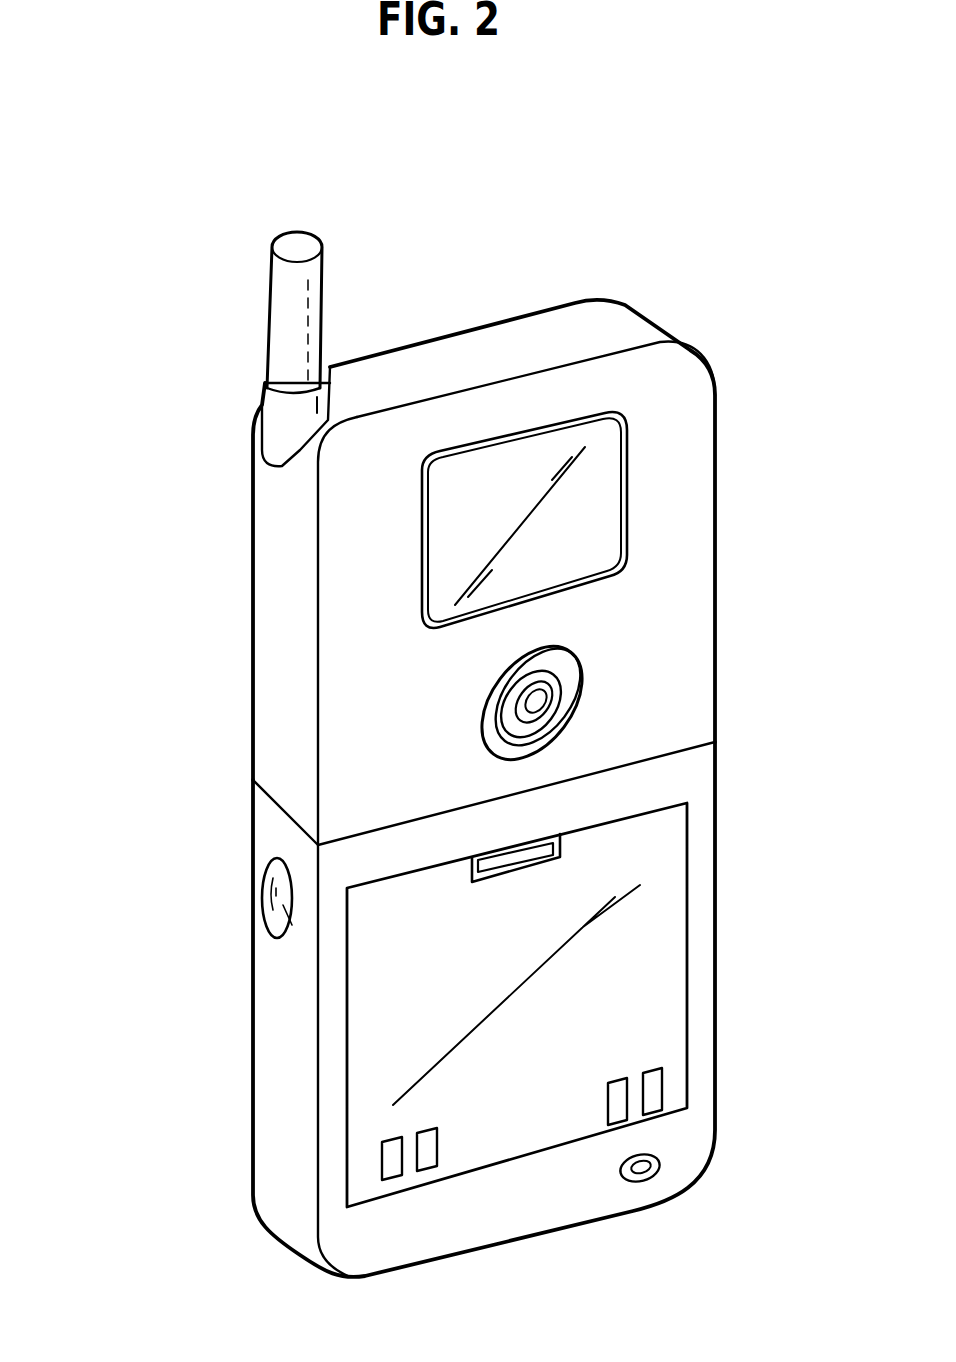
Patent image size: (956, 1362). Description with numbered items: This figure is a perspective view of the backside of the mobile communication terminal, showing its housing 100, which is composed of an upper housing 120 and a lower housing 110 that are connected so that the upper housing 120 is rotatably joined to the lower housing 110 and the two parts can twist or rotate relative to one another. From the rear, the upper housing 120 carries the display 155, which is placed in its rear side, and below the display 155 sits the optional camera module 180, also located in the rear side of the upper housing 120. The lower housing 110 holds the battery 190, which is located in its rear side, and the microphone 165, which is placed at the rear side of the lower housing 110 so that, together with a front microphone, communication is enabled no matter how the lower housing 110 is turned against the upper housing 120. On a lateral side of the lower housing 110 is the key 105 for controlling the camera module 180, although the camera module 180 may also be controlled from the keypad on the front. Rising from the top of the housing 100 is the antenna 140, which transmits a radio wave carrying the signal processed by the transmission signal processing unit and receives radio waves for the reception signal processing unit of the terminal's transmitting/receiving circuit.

The housing 100 is at (141, 681).
The key 105 is at (265, 905).
The lower housing 110 is at (280, 833).
The upper housing 120 is at (280, 682).
The antenna 140 is at (297, 327).
The display 155 is at (597, 507).
The microphone 165 is at (660, 1172).
The camera module 180 is at (552, 702).
The battery 190 is at (640, 915).